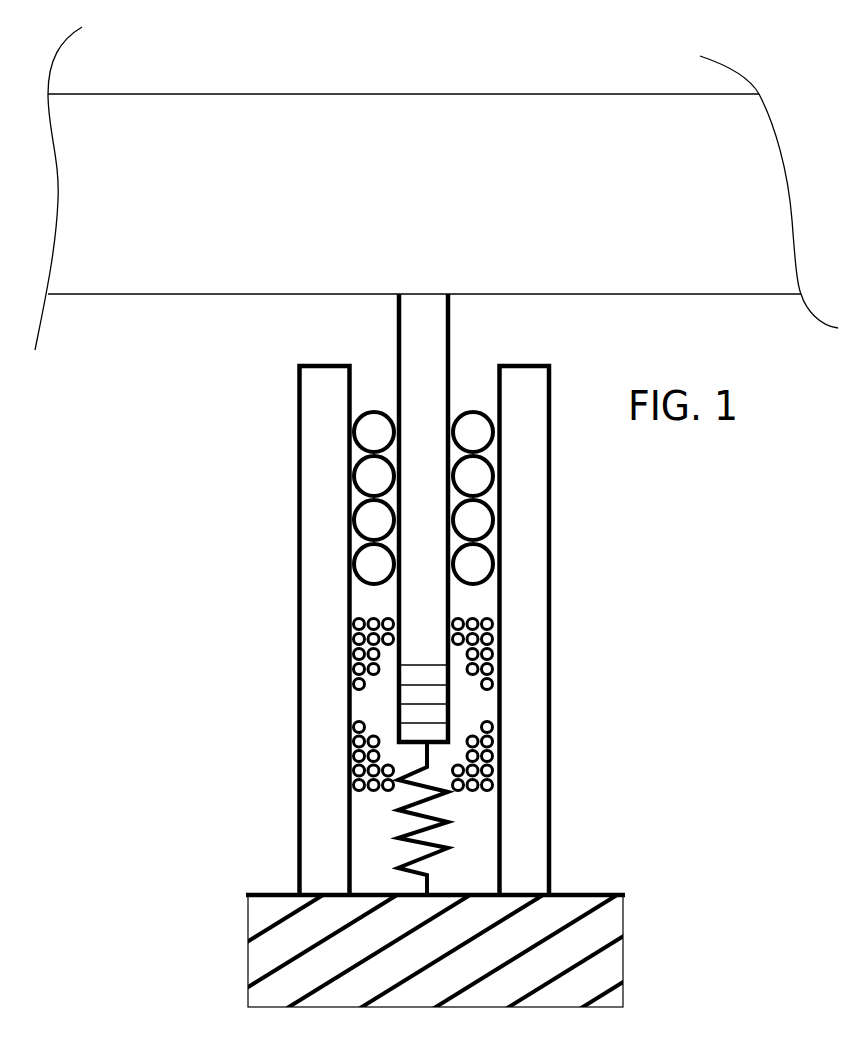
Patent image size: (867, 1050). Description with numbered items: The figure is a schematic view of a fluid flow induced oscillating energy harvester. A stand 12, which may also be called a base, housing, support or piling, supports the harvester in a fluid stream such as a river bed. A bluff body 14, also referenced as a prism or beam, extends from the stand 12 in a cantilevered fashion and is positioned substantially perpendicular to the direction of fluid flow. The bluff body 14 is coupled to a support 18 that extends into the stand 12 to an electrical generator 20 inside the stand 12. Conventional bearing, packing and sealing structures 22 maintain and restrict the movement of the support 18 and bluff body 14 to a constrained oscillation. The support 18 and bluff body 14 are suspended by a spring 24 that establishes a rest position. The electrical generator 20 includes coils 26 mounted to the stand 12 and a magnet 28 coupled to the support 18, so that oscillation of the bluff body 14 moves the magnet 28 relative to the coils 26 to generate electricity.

The stand 12 is at (335, 416).
The bluff body 14 is at (152, 161).
The support 18 is at (430, 407).
The electrical generator 20 is at (482, 606).
The bearing, packing and sealing structures 22 is at (386, 446).
The spring 24 is at (433, 863).
The coils 26 is at (345, 658).
The magnet 28 is at (447, 707).